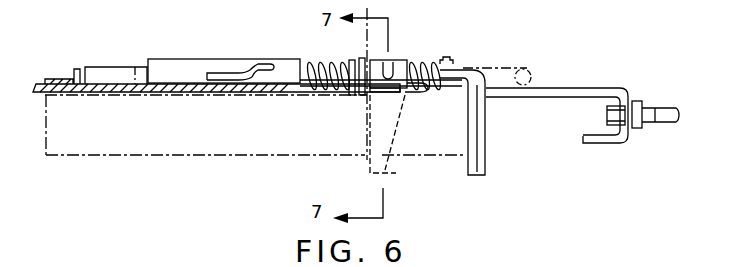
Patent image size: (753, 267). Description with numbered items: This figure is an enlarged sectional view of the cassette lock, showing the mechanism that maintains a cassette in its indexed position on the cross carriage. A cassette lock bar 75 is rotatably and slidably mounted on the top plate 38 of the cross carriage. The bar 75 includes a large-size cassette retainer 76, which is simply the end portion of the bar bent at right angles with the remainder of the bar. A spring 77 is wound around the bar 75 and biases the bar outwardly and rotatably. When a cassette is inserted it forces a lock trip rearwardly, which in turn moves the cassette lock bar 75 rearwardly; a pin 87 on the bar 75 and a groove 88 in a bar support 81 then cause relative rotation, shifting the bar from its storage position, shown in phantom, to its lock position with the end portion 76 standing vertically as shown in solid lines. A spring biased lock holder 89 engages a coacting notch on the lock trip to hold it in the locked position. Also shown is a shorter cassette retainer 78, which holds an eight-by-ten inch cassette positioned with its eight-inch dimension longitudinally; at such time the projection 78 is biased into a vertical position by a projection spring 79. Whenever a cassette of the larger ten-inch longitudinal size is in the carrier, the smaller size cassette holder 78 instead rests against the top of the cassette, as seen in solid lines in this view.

The top plate 38 is at (33, 93).
The cassette lock bar 75 is at (457, 72).
The large-size cassette retainer 76 is at (531, 68).
The spring 77 is at (320, 90).
The shorter cassette retainer 78 is at (399, 64).
The projection spring 79 is at (437, 91).
The bar support 81 is at (163, 59).
The pin 87 is at (222, 73).
The groove 88 is at (246, 71).
The spring biased lock holder 89 is at (61, 79).